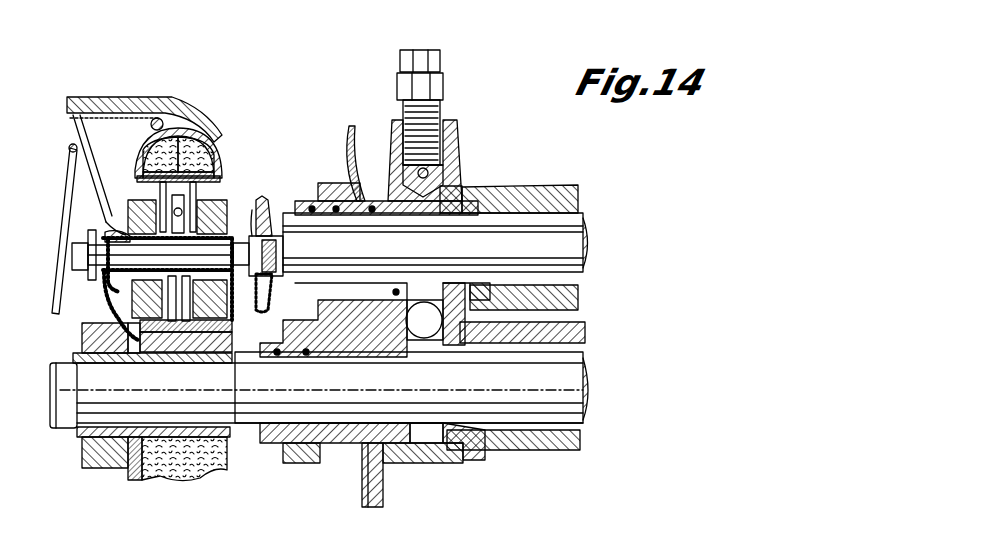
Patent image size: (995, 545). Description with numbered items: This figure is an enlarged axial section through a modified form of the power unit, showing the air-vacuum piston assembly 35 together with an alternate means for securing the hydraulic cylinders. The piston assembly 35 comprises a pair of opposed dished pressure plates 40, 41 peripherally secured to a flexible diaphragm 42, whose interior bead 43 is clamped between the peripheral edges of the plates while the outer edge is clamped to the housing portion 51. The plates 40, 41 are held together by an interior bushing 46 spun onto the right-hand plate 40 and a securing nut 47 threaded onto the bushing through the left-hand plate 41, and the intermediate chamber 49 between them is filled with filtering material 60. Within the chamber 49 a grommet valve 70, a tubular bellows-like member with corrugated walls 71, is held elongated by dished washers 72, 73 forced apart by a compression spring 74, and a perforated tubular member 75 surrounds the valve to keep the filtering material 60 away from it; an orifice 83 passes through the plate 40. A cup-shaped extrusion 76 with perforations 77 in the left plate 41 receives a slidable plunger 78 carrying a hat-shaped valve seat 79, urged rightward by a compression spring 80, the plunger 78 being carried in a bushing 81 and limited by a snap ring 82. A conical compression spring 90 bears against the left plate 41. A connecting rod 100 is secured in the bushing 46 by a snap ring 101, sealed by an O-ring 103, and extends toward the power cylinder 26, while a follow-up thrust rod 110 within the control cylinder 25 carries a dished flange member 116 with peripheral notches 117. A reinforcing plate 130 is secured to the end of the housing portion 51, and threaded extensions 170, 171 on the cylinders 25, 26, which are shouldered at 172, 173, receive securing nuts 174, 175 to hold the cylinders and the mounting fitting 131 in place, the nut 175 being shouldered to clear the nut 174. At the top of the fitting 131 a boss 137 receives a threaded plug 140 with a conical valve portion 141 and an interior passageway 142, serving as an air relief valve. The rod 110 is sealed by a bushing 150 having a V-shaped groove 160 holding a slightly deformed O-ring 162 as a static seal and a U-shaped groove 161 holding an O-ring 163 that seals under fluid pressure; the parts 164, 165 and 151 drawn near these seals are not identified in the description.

The flexible diaphragm 42 is at (225, 108).
The interior bead 43 is at (206, 118).
The corrugations 71 is at (187, 160).
The compression spring 74 is at (225, 147).
The piston assembly 35 is at (238, 170).
The dished washer 73 is at (235, 182).
The dished washer 72 is at (135, 210).
The grommet valve 70 is at (105, 190).
The cup-shaped extrusion 76 is at (70, 215).
The perforations 77 is at (120, 228).
The slidable plunger 78 is at (76, 255).
The conical compression spring 90 is at (52, 305).
The snap ring 82 is at (110, 282).
The bushing 81 is at (82, 335).
The compression spring 80 is at (225, 300).
The intermediate chamber 49 is at (225, 330).
The perforated tubular member 75 is at (165, 355).
The sealing O-ring 103 is at (185, 354).
The snap ring 101 is at (76, 436).
The securing nut 47 is at (106, 466).
The left-hand pressure plate 41 is at (136, 482).
The interior bushing 46 is at (156, 472).
The right-hand pressure plate 40 is at (203, 462).
The filtering material 60 is at (200, 456).
The valve seat 79 is at (268, 198).
The orifice 83 is at (252, 206).
The dished flange member 116 is at (275, 215).
The peripheral notches 117 is at (268, 295).
The follow-up thrust rod 110 is at (583, 222).
The undercut groove 160 is at (312, 200).
The O-ring 162 is at (311, 218).
The undercut groove 161 is at (336, 216).
The O-ring 163 is at (372, 222).
The securing nut 174 is at (336, 184).
The conical valve portion 141 is at (455, 150).
The boss 137 is at (445, 112).
The threaded plug 140 is at (442, 56).
The interior passageway 142 is at (405, 55).
The threaded extension 170 is at (458, 190).
The shoulder 172 is at (470, 190).
The control cylinder 25 is at (572, 187).
The seal 164 is at (280, 358).
The seal 165 is at (310, 356).
The bushing 150 is at (580, 296).
The bearing 151 is at (585, 330).
The connecting rod 100 is at (585, 392).
The power cylinder 26 is at (565, 450).
The shoulder 173 is at (475, 452).
The mounting fitting 131 is at (415, 463).
The reinforcing plate 130 is at (375, 500).
The housing portion 51 is at (362, 490).
The threaded extension 171 is at (298, 462).
The securing nut 175 is at (268, 445).